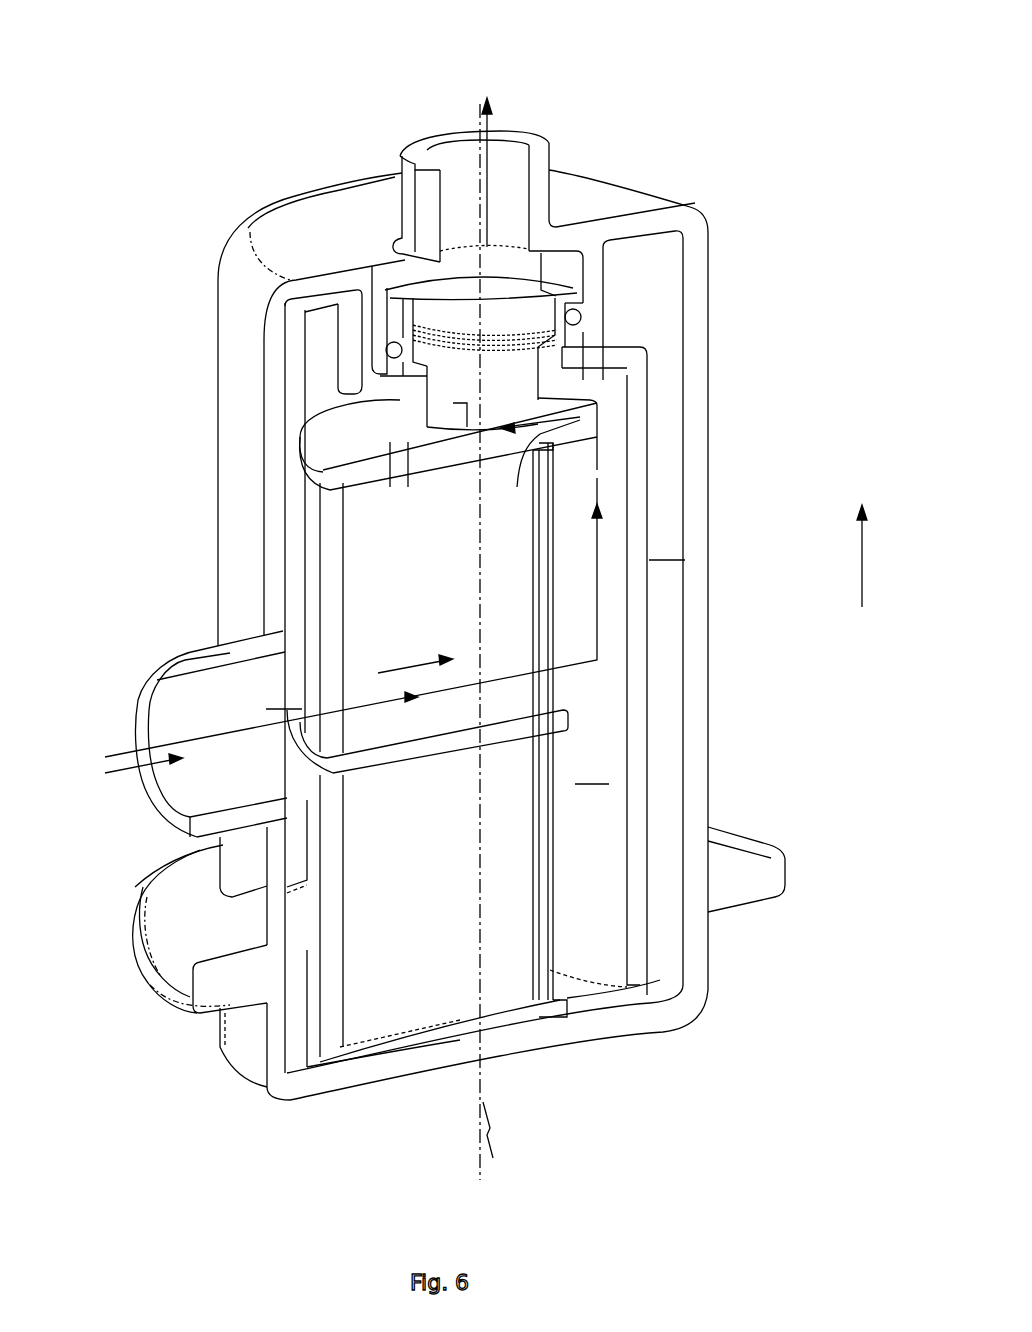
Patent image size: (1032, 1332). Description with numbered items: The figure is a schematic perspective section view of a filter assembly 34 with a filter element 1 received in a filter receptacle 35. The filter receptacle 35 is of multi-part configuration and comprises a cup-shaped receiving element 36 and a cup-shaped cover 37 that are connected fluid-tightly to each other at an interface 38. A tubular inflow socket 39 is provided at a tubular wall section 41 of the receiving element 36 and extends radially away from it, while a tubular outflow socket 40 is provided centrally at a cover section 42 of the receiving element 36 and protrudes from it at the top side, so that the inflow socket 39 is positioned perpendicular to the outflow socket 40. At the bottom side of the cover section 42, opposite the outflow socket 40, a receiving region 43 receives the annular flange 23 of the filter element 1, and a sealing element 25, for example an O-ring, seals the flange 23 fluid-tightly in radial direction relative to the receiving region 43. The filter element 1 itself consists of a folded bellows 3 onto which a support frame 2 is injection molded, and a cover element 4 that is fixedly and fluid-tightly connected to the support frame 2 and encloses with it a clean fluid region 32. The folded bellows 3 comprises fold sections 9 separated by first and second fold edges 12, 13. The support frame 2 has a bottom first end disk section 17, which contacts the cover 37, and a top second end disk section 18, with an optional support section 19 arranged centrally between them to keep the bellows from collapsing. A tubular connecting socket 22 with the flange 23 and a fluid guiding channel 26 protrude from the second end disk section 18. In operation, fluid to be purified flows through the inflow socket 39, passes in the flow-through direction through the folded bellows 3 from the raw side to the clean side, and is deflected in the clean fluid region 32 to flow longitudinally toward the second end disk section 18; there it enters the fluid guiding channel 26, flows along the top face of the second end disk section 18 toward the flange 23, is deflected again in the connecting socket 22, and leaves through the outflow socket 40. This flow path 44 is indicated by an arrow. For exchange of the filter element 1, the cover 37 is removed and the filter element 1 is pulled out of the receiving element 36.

The filter element 1 is at (466, 623).
The support frame 2 is at (456, 647).
The folded bellows 3 is at (306, 625).
The cover element 4 is at (647, 664).
The fold section 9 is at (421, 980).
The first fold edge 12 is at (333, 953).
The second fold edge 13 is at (543, 853).
The first end disk section 17 is at (341, 1047).
The second end disk section 18 is at (333, 480).
The support section 19 is at (333, 770).
The connecting socket 22 is at (418, 407).
The annular flange 23 is at (563, 333).
The sealing element 25 is at (590, 314).
The fluid guiding channel 26 is at (470, 407).
The clean fluid region 32 is at (605, 917).
The filter assembly 34 is at (456, 623).
The filter receptacle 35 is at (288, 1097).
The receiving element 36 is at (709, 598).
The cover 37 is at (535, 1036).
The interface 38 is at (203, 992).
The inflow socket 39 is at (165, 720).
The outflow socket 40 is at (545, 157).
The tubular wall section 41 is at (700, 722).
The cover section 42 is at (320, 287).
The receiving region 43 is at (597, 287).
The flow path 44 is at (600, 472).